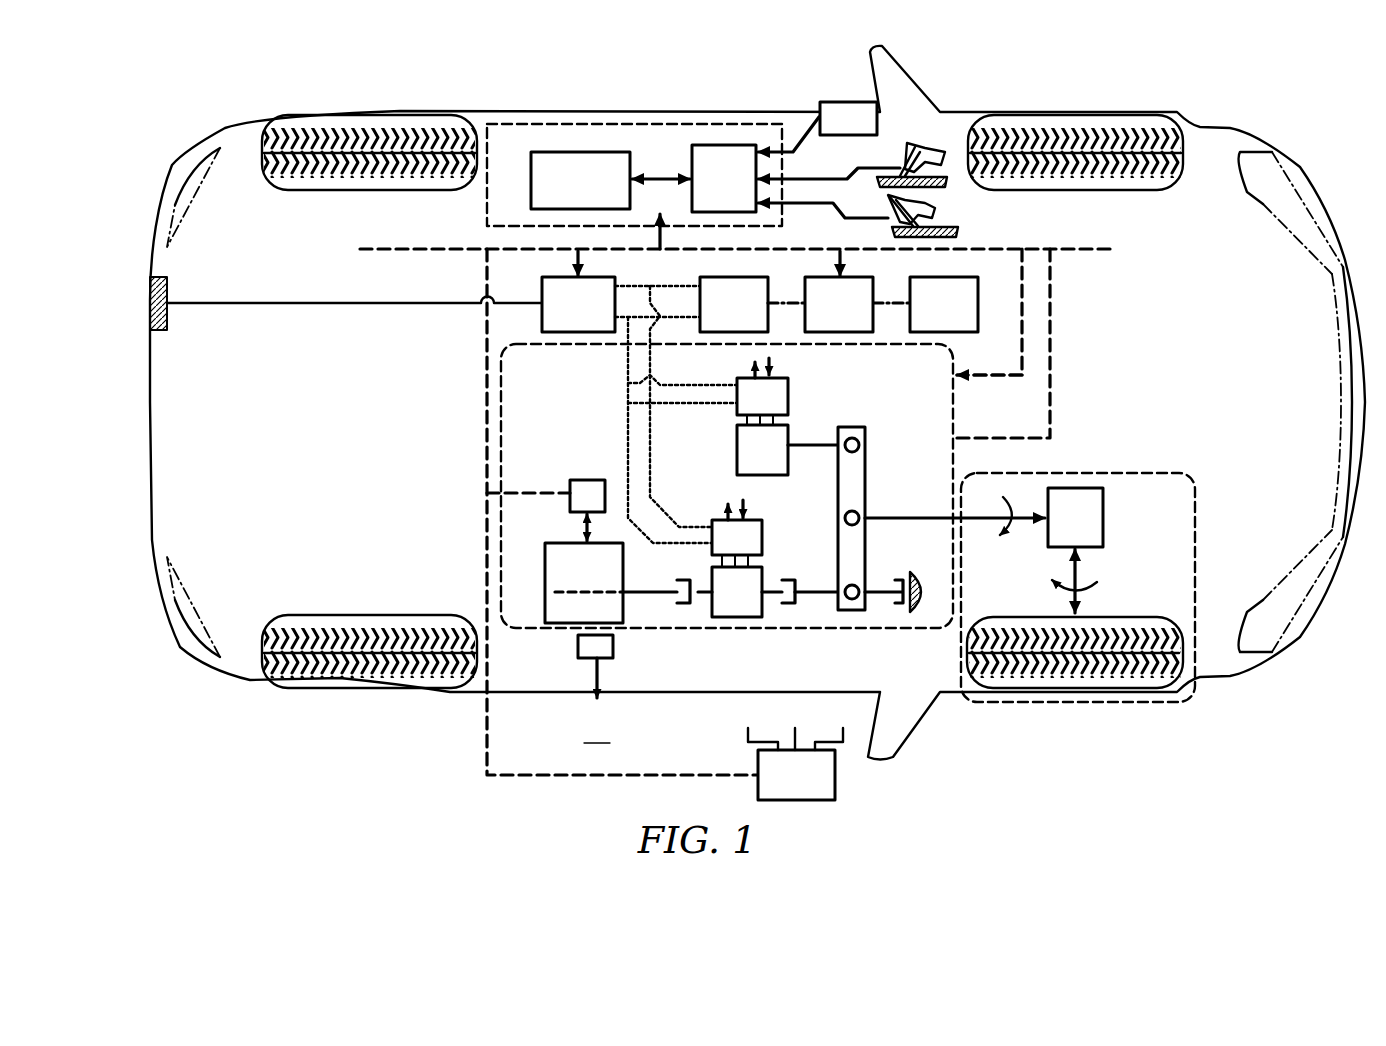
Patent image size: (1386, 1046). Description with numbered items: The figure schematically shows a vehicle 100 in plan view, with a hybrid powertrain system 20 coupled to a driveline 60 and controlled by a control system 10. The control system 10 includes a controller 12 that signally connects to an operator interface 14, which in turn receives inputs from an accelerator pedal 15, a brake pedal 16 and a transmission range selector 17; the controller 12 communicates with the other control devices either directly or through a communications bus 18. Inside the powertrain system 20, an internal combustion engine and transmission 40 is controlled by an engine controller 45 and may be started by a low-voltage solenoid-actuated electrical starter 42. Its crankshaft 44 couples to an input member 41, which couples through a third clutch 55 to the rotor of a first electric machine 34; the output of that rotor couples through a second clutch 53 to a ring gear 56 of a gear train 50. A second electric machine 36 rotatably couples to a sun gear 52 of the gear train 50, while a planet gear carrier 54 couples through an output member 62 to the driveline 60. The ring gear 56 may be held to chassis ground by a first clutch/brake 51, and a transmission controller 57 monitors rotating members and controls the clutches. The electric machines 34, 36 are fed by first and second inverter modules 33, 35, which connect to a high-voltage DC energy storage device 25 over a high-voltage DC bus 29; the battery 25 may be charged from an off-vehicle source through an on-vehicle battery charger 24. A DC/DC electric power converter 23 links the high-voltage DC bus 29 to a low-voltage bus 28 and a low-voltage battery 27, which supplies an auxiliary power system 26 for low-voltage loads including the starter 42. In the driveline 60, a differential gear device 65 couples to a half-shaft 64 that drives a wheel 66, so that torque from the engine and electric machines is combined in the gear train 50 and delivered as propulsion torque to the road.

The vehicle 100 is at (1130, 223).
The control system 10 is at (519, 158).
The controller 12 is at (566, 191).
The operator interface 14 is at (710, 190).
The accelerator pedal 15 is at (888, 212).
The brake pedal 16 is at (900, 165).
The transmission range selector 17 is at (835, 129).
The communications bus 18 is at (418, 246).
The hybrid powertrain system 20 is at (957, 396).
The DC/DC electric power converter 23 is at (720, 315).
The on-vehicle battery charger 24 is at (150, 300).
The high-voltage DC energy storage device 25 is at (564, 315).
The auxiliary power system 26 is at (930, 315).
The low-voltage battery 27 is at (825, 315).
The low-voltage bus 28 is at (778, 303).
The high-voltage DC bus 29 is at (686, 317).
The first inverter module 33 is at (762, 540).
The first electric machine 34 is at (730, 617).
The second inverter module 35 is at (788, 395).
The second electric machine 36 is at (768, 475).
The internal combustion engine and transmission 40 is at (627, 614).
The input member 41 is at (700, 596).
The low-voltage solenoid-actuated electrical starter 42 is at (605, 660).
The crankshaft 44 is at (585, 590).
The engine controller 45 is at (550, 483).
The gear train 50 is at (854, 616).
The first clutch/brake 51 is at (905, 606).
The sun gear 52 is at (860, 440).
The second clutch 53 is at (790, 605).
The planet gear carrier 54 is at (860, 512).
The third clutch 55 is at (677, 605).
The ring gear 56 is at (860, 586).
The transmission controller 57 is at (781, 786).
The driveline 60 is at (1113, 468).
The output member 62 is at (981, 518).
The half-shaft 64 is at (1082, 577).
The differential gear device 65 is at (1061, 529).
The wheel 66 is at (1047, 612).